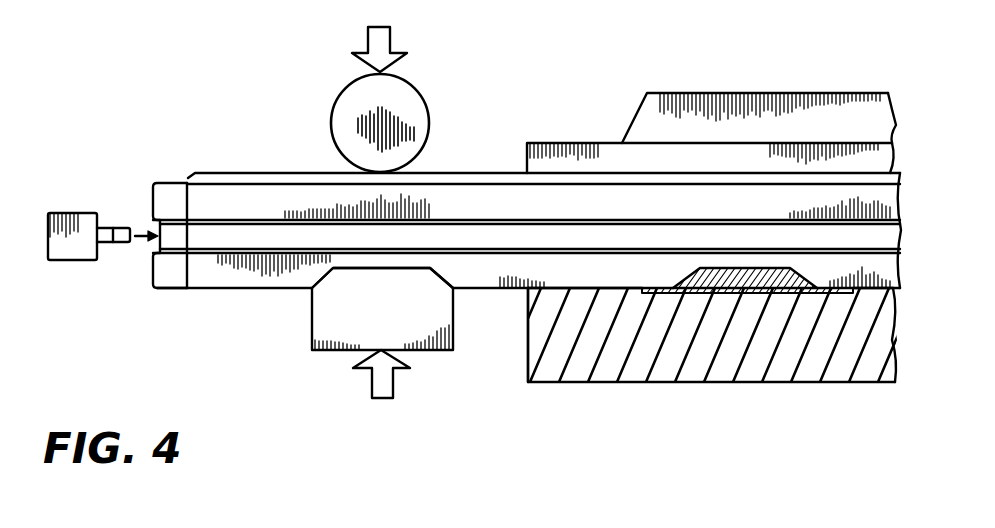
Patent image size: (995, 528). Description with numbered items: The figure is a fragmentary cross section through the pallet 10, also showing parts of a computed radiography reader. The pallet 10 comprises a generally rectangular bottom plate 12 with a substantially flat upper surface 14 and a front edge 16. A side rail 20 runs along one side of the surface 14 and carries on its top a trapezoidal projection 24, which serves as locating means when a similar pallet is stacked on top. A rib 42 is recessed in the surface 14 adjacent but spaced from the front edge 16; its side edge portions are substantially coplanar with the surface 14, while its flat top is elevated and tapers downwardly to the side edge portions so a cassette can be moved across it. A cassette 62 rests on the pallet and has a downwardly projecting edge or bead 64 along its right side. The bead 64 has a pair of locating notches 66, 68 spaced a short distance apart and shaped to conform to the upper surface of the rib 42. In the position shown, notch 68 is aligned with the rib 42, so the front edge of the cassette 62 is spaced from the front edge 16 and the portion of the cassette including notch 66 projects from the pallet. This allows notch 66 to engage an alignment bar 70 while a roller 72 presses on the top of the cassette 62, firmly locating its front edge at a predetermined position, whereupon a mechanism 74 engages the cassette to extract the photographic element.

The pallet 10 is at (709, 340).
The bottom plate 12 is at (625, 373).
The upper surface 14 is at (555, 287).
The front edge 16 is at (528, 363).
The side rail 20 is at (582, 143).
The projection 24 is at (733, 93).
The rib 42 is at (738, 277).
The cassette 62 is at (214, 142).
The projecting edge or bead 64 is at (215, 282).
The locating notch 66 is at (367, 270).
The locating notch 68 is at (693, 278).
The alignment bar 70 is at (312, 333).
The roller 72 is at (334, 106).
The mechanism 74 is at (73, 213).